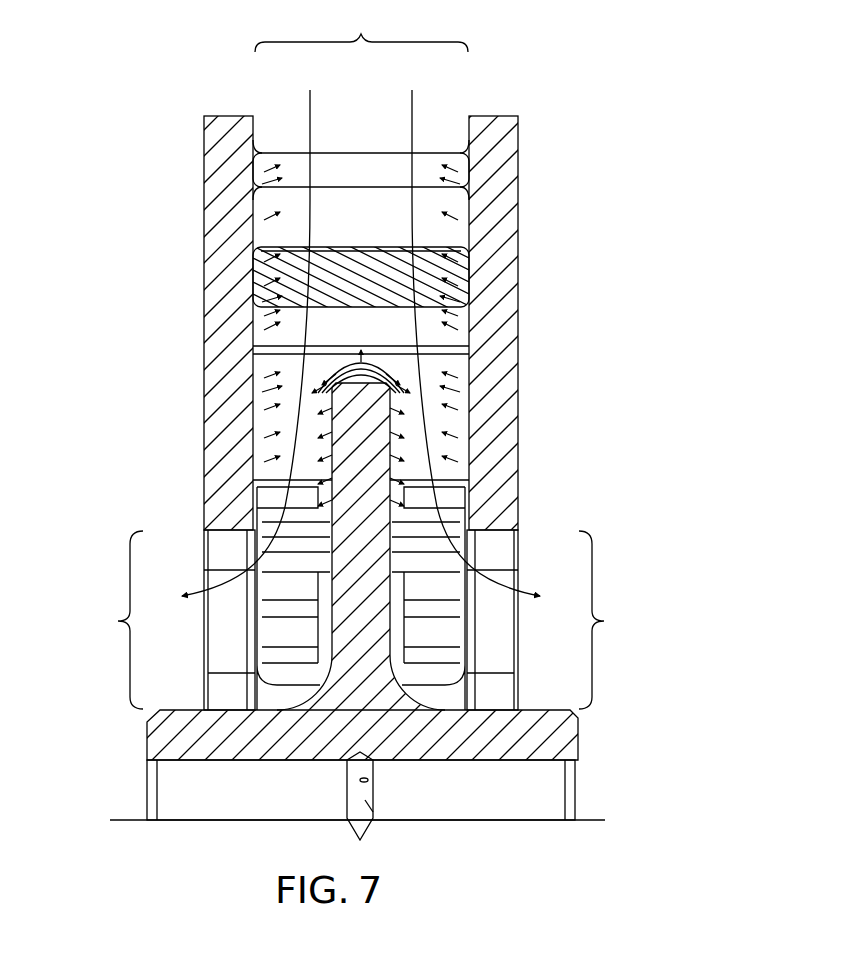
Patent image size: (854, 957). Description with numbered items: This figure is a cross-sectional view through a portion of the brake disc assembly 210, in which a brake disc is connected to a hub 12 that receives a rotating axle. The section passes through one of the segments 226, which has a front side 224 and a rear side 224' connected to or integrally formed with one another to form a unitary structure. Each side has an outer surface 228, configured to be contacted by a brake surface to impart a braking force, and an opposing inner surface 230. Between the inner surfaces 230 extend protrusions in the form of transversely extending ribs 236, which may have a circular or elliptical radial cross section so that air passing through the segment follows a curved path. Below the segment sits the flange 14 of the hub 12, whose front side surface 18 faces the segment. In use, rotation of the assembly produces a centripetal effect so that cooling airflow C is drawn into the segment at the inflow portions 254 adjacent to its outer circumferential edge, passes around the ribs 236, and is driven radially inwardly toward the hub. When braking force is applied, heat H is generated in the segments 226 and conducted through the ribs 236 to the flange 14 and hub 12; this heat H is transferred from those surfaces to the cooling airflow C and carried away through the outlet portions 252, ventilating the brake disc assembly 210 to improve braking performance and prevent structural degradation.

The brake disc assembly 210 is at (540, 30).
The hub 12 is at (565, 758).
The flange 14 is at (370, 460).
The front side surface 18 is at (332, 426).
The outer surface 228 is at (253, 183).
The ribs 236 is at (297, 166).
The front side 224 is at (180, 301).
The segments 226 is at (225, 352).
The rear side 224' is at (427, 450).
The inner surface 230 is at (253, 152).
The inflow portions 254 is at (361, 29).
The outlet portions 252 is at (361, 598).
The cooling airflow C is at (300, 243).
The heat H is at (468, 293).